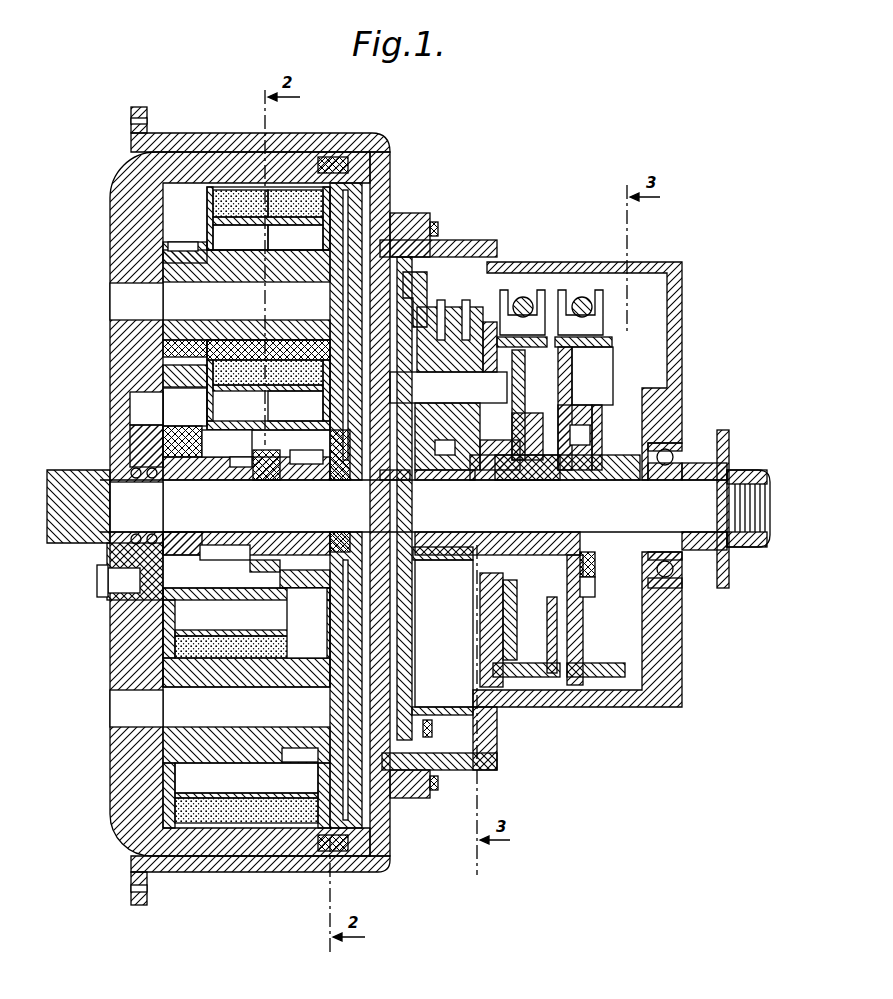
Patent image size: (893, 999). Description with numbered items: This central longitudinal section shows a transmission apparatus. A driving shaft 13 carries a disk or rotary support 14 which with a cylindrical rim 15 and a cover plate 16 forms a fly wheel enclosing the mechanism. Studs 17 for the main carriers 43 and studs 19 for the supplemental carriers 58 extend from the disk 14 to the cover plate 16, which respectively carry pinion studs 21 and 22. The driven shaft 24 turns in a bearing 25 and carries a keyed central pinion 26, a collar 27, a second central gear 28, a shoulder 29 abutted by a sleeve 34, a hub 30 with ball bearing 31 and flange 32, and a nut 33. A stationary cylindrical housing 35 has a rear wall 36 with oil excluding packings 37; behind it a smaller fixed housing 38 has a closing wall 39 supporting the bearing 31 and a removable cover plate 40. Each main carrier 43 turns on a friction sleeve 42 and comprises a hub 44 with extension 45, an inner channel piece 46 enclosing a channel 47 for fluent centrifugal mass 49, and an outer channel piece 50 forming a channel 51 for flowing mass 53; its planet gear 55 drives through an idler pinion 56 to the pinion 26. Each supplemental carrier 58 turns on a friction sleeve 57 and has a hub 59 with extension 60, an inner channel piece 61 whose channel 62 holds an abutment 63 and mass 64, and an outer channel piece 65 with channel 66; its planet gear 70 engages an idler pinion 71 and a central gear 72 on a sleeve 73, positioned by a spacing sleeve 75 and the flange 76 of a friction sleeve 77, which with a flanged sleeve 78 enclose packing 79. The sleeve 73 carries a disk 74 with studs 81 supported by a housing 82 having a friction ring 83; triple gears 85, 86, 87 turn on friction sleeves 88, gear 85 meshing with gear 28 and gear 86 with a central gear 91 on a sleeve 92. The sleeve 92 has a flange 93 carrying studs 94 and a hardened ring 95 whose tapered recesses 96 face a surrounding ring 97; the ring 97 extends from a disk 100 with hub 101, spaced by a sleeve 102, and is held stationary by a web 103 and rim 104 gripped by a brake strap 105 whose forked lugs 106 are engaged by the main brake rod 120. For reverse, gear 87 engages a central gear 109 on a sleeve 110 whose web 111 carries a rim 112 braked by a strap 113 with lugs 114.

The driving shaft 13 is at (62, 472).
The circular disk or rotary support 14 is at (120, 215).
The cylindrical rim 15 is at (200, 165).
The circular cover plate 16 is at (345, 225).
The studs for the main carriers 17 is at (326, 559).
The studs for the supplemental carriers 19 is at (246, 707).
The studs for main idler pinions 21 is at (185, 407).
The studs for supplemental idler pinions 22 is at (305, 614).
The driven shaft 24 is at (413, 506).
The bearing 25 is at (108, 540).
The central pinion 26 is at (205, 480).
The collar 27 is at (405, 480).
The second central gear 28 is at (425, 480).
The shoulder 29 is at (598, 489).
The collar or hub 30 is at (688, 440).
The ball bearing 31 is at (710, 402).
The flange or enlargement 32 is at (730, 452).
The nut 33 is at (762, 478).
The sleeve 34 is at (640, 485).
The cylindrical housing 35 is at (345, 133).
The circular wall 36 is at (391, 172).
The oil excluding packings 37 is at (350, 475).
The fixed housing 38 is at (575, 262).
The closing wall 39 is at (684, 645).
The cover plate 40 is at (648, 262).
The friction sleeve 42 is at (240, 320).
The main planetating carrier 43 is at (213, 221).
The hub portion 44 is at (240, 285).
The outward extension 45 is at (170, 272).
The inner channel member 46 is at (323, 236).
The annular channel 47 is at (240, 237).
The centrifugal mass 49 is at (268, 385).
The outer channel piece 50 is at (210, 200).
The outer channel 51 is at (295, 406).
The flowing mass 53 is at (295, 203).
The planet gear 55 is at (165, 345).
The idler pinion 56 is at (165, 380).
The friction sleeve 57 is at (240, 735).
The supplemental carrier 58 is at (280, 800).
The hub 59 is at (210, 740).
The hub extension 60 is at (298, 740).
The inner channel piece 61 is at (165, 778).
The inner channel 62 is at (246, 778).
The abutment 63 is at (246, 810).
The centrifugal mass 64 is at (235, 793).
The outer channel piece 65 is at (165, 806).
The outer channel 66 is at (246, 637).
The planet gear 70 is at (290, 764).
The idler pinion 71 is at (280, 578).
The central gear 72 is at (306, 452).
The sleeve 73 is at (349, 531).
The rotary support or disk 74 is at (412, 270).
The spacing sleeve 75 is at (265, 513).
The flange 76 is at (258, 458).
The friction sleeve 77 is at (330, 480).
The flanged sleeve 78 is at (240, 462).
The packing material 79 is at (265, 478).
The studs 81 is at (448, 387).
The bridge or housing 82 is at (455, 300).
The friction ring 83 is at (530, 405).
The first gear 85 is at (450, 327).
The second or middle gear 86 is at (495, 322).
The third gear 87 is at (490, 340).
The friction sleeves 88 is at (447, 426).
The central gear 91 is at (450, 480).
The sleeve 92 is at (500, 480).
The annular flange 93 is at (555, 480).
The studs 94 is at (600, 415).
The ring 95 is at (595, 565).
The tapered recesses 96 is at (595, 588).
The steel ring 97 is at (575, 410).
The disk 100 is at (600, 430).
The hub 101 is at (648, 470).
The sleeve 102 is at (565, 540).
The web 103 is at (575, 392).
The rim or pulley 104 is at (575, 370).
The brake band or strap 105 is at (600, 690).
The forked lugs 106 is at (590, 320).
The central gear 109 is at (420, 637).
The sleeve 110 is at (460, 562).
The annular web 111 is at (514, 620).
The rim or pulley 112 is at (535, 690).
The brake strap 113 is at (515, 690).
The lugs 114 is at (525, 297).
The main brake rod 120 is at (585, 297).